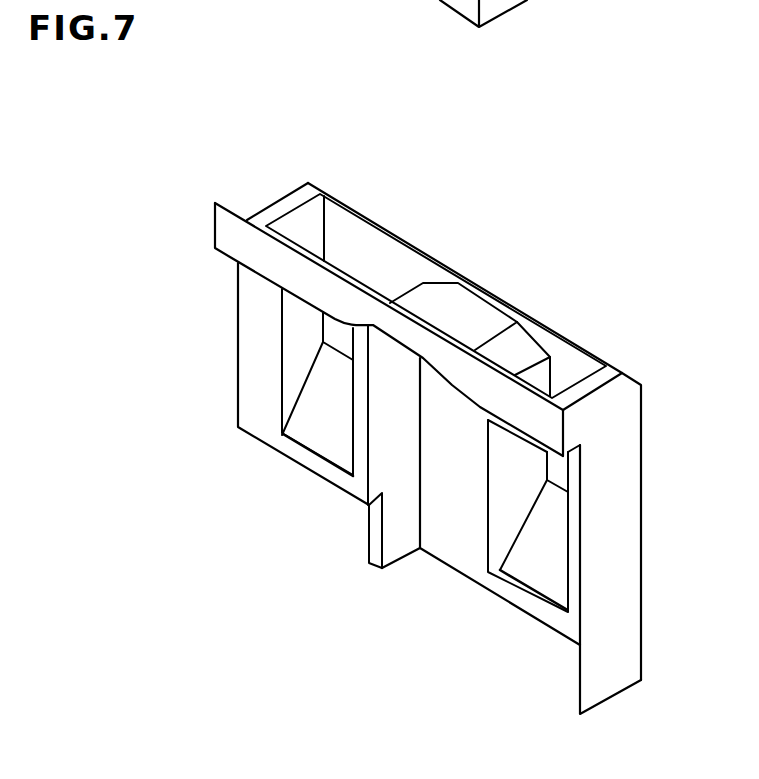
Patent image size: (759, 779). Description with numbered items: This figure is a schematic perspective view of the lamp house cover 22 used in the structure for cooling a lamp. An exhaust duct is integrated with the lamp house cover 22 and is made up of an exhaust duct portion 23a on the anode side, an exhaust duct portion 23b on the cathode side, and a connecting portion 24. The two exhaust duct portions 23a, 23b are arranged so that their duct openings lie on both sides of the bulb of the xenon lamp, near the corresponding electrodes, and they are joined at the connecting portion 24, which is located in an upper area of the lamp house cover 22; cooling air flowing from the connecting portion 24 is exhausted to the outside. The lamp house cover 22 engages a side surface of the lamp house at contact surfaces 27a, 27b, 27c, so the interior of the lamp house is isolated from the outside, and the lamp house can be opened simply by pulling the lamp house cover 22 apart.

The lamp house cover 22 is at (538, 270).
The connecting portion 24 is at (455, 295).
The contact surface 27a is at (247, 252).
The contact surface 27b is at (572, 603).
The contact surface 27c is at (373, 532).
The exhaust duct portion on the anode side 23a is at (537, 530).
The exhaust duct portion on the cathode side 23b is at (318, 403).